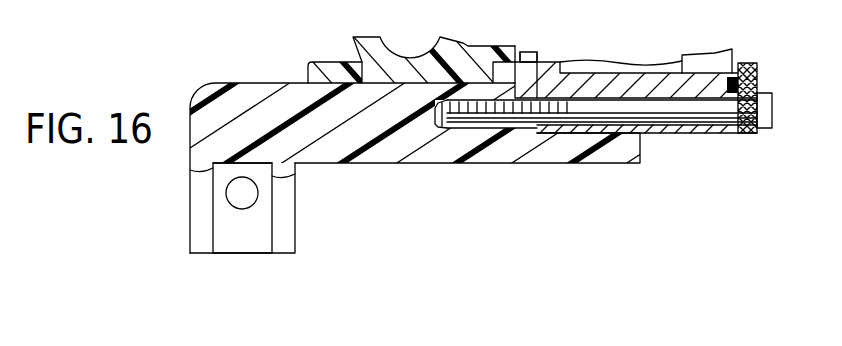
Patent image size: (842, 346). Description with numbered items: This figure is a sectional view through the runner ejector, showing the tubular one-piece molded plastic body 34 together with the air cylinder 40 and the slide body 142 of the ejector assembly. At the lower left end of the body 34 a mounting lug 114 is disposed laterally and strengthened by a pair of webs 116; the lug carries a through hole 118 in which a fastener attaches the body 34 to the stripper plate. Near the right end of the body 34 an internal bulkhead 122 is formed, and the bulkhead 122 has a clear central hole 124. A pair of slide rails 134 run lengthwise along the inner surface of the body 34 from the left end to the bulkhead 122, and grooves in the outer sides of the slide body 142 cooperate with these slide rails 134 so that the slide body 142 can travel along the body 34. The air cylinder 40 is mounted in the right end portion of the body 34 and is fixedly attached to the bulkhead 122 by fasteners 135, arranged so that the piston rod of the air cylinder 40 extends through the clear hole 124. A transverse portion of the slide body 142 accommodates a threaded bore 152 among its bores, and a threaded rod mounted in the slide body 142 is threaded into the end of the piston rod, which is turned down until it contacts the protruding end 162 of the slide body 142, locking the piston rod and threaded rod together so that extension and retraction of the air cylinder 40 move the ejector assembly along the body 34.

The body 34 is at (519, 167).
The air cylinder 40 is at (734, 140).
The mounting lug 114 is at (243, 248).
The web 116 is at (291, 207).
The through hole 118 is at (231, 205).
The bulkhead 122 is at (520, 62).
The clear central hole 124 is at (537, 52).
The slide rail 134 is at (291, 98).
The fastener 135 is at (670, 113).
The slide body 142 is at (337, 56).
The threaded bore 152 is at (392, 40).
The protruding end 162 is at (512, 46).